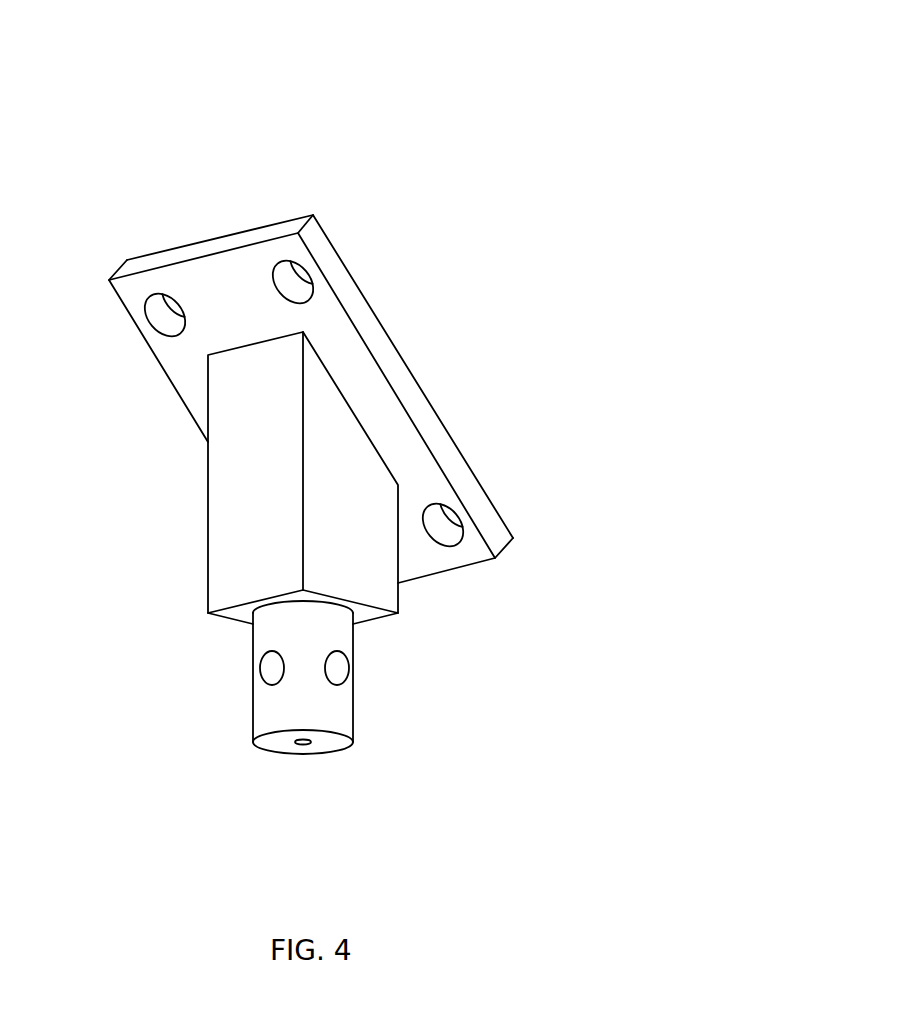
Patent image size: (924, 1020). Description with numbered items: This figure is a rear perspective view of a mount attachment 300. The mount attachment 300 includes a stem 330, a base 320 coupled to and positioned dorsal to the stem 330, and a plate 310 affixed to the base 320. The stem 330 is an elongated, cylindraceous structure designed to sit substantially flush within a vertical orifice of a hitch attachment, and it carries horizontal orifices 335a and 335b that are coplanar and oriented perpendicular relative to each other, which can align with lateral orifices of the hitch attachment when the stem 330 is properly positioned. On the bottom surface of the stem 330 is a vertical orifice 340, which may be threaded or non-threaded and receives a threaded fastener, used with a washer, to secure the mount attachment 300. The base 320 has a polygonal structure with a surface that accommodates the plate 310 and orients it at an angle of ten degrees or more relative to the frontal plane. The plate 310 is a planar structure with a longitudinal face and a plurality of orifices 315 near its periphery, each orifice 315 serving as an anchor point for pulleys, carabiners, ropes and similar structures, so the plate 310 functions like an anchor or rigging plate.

The mount attachment 300 is at (798, 167).
The plate 310 is at (177, 250).
The orifice 315 is at (447, 532).
The base 320 is at (225, 494).
The stem 330 is at (253, 712).
The horizontal orifice 335a is at (337, 670).
The horizontal orifice 335b is at (270, 670).
The vertical orifice 340 is at (305, 743).